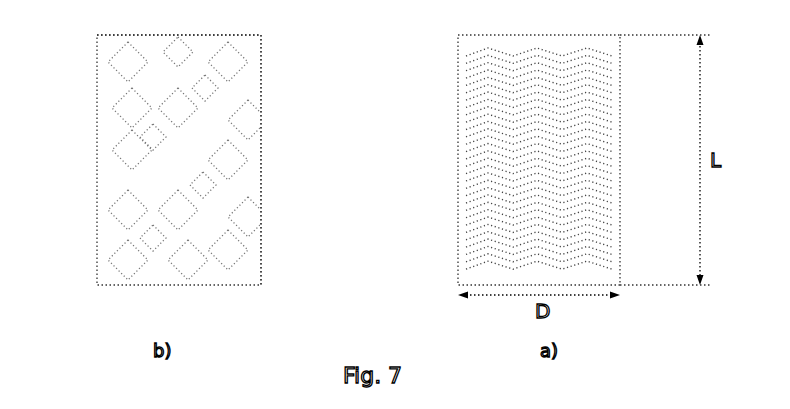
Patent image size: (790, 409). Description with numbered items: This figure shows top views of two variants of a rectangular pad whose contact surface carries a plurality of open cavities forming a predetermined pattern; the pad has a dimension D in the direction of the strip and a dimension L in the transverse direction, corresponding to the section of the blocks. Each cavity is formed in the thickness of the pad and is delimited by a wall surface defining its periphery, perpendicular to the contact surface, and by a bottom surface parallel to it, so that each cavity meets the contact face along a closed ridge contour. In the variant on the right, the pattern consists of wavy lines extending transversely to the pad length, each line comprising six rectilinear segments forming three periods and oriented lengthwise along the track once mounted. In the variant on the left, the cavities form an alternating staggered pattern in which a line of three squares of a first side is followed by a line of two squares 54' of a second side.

The square cavity 54' is at (150, 158).